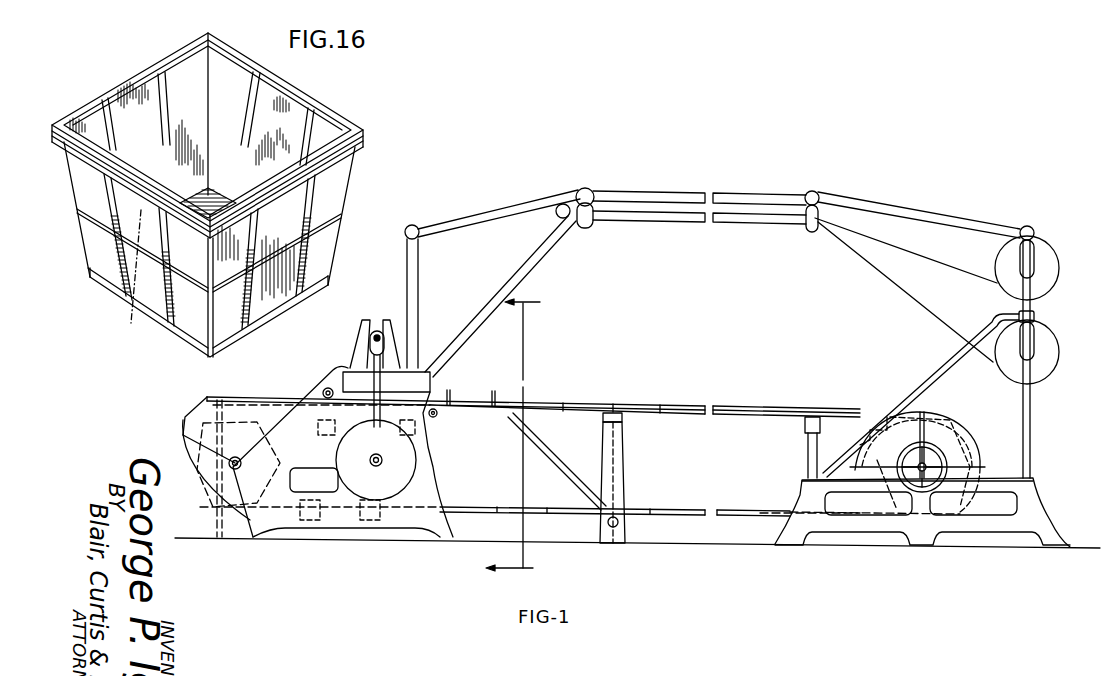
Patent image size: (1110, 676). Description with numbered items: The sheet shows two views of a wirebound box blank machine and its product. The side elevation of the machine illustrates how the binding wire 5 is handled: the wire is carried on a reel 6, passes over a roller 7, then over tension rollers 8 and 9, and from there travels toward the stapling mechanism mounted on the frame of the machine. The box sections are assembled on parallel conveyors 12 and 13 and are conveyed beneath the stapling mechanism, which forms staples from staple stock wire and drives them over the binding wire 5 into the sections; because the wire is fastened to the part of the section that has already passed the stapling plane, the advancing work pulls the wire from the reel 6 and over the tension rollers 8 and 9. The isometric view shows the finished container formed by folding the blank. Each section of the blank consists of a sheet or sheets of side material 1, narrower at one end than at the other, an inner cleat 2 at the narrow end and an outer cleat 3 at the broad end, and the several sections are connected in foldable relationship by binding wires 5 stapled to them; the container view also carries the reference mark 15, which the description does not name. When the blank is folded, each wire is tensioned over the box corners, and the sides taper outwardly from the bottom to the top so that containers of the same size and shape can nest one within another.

In FIG. 16, the side material 1 is at (133, 93).
In FIG. 16, the inner cleat 2 is at (128, 305).
In FIG. 1, the inner cleat 2 is at (513, 435).
In FIG. 16, the outer cleat 3 is at (183, 50).
In FIG. 16, the binding wire 5 is at (367, 133).
In FIG. 1, the binding wire 5 is at (940, 260).
In FIG. 1, the reel 6 is at (1057, 262).
In FIG. 1, the roller 7 is at (803, 212).
In FIG. 1, the tension roller 8 is at (570, 200).
In FIG. 1, the tension roller 9 is at (577, 215).
In FIG. 1, the conveyor 12 is at (300, 417).
In FIG. 1, the conveyor 13 is at (680, 408).
In FIG. 16, the stitch line 15 is at (134, 153).